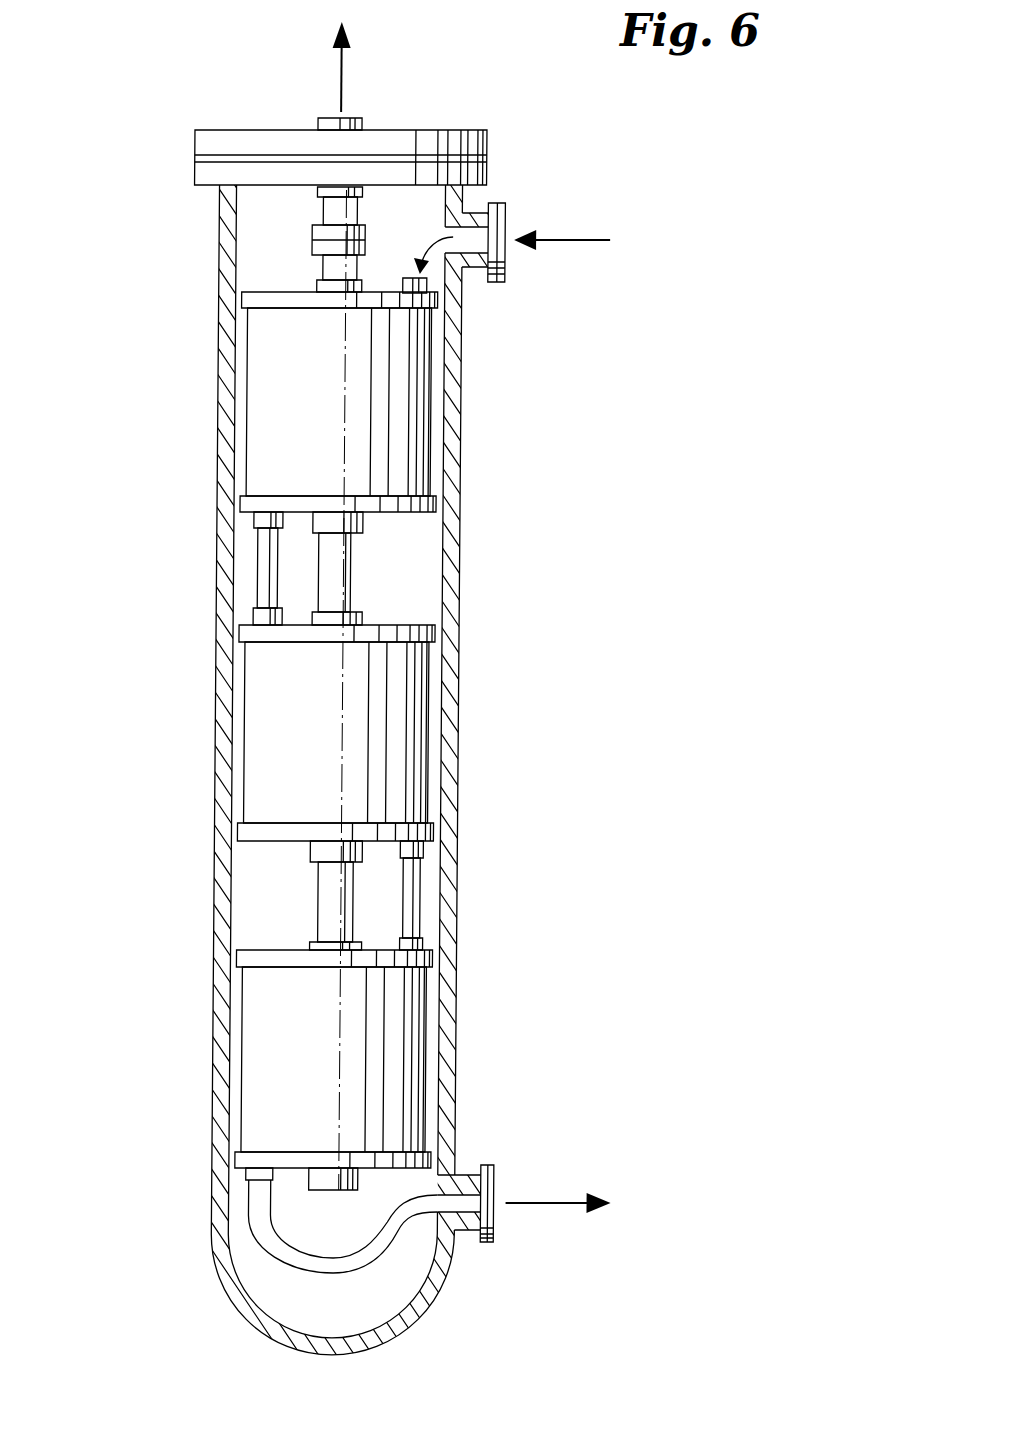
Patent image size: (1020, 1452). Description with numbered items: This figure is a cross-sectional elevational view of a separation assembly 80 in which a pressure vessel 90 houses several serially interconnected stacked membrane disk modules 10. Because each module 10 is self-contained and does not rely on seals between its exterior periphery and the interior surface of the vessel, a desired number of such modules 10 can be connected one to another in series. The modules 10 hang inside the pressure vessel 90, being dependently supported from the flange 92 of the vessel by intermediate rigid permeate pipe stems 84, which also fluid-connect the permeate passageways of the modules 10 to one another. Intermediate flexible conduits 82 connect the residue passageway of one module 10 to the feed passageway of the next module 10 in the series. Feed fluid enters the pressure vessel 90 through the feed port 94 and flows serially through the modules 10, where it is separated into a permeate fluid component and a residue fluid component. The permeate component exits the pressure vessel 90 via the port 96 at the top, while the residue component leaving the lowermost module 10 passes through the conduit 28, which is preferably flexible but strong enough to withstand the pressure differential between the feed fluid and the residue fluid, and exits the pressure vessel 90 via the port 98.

The separation assembly 80 is at (176, 1150).
The pressure vessel 90 is at (472, 398).
The flange 92 is at (439, 144).
The feed port 94 is at (480, 270).
The port 96 is at (362, 129).
The port 98 is at (481, 1181).
The conduit 28 is at (308, 1267).
The module 10 is at (349, 415).
The intermediate rigid permeate pipe stems 84 is at (332, 268).
The intermediate flexible conduits 82 is at (268, 571).